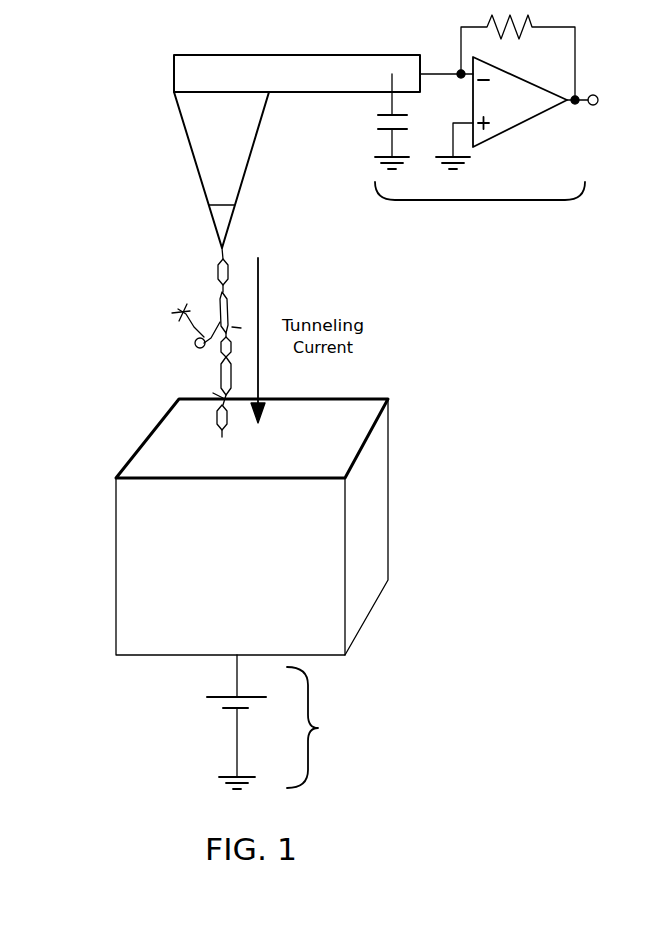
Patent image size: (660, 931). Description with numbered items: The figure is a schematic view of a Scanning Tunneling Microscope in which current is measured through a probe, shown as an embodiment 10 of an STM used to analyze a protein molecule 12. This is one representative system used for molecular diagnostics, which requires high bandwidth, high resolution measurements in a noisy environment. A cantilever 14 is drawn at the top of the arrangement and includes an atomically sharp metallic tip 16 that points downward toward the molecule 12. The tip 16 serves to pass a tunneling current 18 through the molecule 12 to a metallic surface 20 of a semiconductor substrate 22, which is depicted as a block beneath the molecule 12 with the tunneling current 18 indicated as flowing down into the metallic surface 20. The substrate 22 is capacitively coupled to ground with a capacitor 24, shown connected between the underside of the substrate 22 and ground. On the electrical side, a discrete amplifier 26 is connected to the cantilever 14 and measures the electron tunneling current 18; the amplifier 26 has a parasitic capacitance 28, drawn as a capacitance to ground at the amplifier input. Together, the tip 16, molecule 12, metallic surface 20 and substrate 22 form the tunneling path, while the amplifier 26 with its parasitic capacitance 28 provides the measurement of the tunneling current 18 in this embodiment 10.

The embodiment of an STM 10 is at (484, 354).
The protein molecule 12 is at (217, 376).
The cantilever 14 is at (200, 82).
The atomically sharp metallic tip 16 is at (226, 223).
The tunneling current 18 is at (258, 298).
The metallic surface 20 is at (357, 427).
The semiconductor substrate 22 is at (133, 511).
The capacitor 24 is at (318, 728).
The discrete amplifier 26 is at (480, 200).
The parasitic capacitance 28 is at (375, 124).